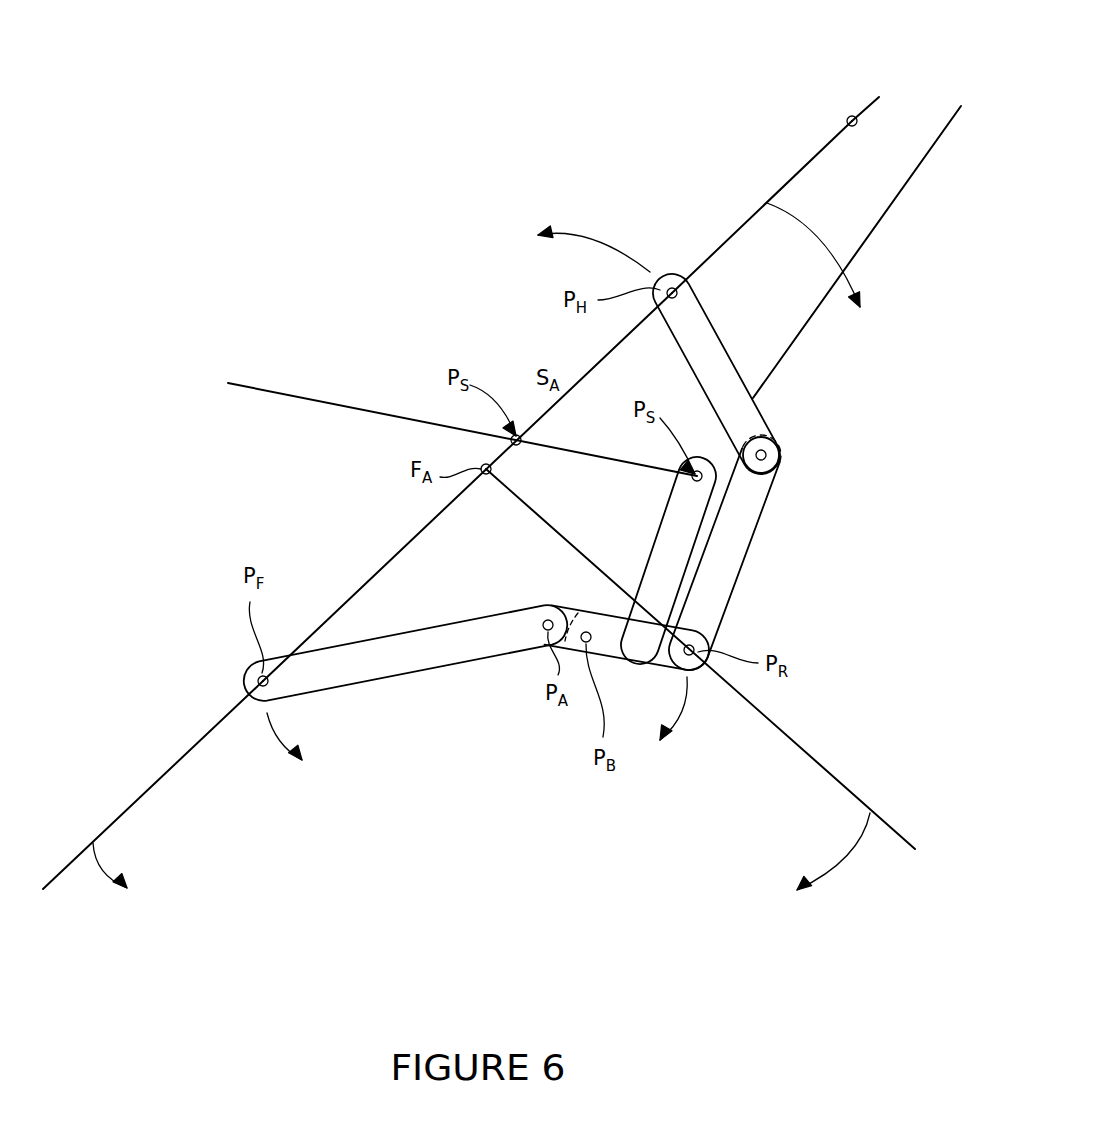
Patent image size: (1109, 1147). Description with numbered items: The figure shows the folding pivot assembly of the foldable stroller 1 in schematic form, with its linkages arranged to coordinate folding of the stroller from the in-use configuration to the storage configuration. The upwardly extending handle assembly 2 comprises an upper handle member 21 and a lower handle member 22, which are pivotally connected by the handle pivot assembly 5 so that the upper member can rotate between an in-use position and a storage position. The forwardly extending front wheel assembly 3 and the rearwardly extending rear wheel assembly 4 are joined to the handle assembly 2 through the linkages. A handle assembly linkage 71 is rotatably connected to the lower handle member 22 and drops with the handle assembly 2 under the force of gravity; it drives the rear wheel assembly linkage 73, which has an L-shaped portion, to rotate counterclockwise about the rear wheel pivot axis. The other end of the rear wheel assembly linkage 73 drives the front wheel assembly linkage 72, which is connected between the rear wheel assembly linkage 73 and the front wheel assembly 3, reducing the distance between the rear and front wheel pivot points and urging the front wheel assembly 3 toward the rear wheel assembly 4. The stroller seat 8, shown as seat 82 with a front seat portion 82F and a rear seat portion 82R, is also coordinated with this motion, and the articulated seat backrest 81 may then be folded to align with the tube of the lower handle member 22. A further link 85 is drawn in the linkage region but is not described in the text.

The foldable stroller 1 is at (262, 95).
The handle assembly 2 is at (790, 180).
The front wheel assembly 3 is at (145, 793).
The rear wheel assembly 4 is at (840, 782).
The handle pivot assembly 5 is at (848, 116).
The stroller seat 8 is at (455, 332).
The upper handle member 21 is at (862, 113).
The lower handle member 22 is at (664, 282).
The handle assembly linkage 71 is at (738, 413).
The front wheel assembly linkage 72 is at (357, 668).
The rear wheel assembly linkage 73 is at (732, 538).
The articulated seat backrest 81 is at (865, 243).
The stroller seat 82 is at (323, 403).
The front seat portion 82F is at (292, 372).
The rear seat portion 82R is at (635, 478).
The connecting link 85 is at (678, 530).